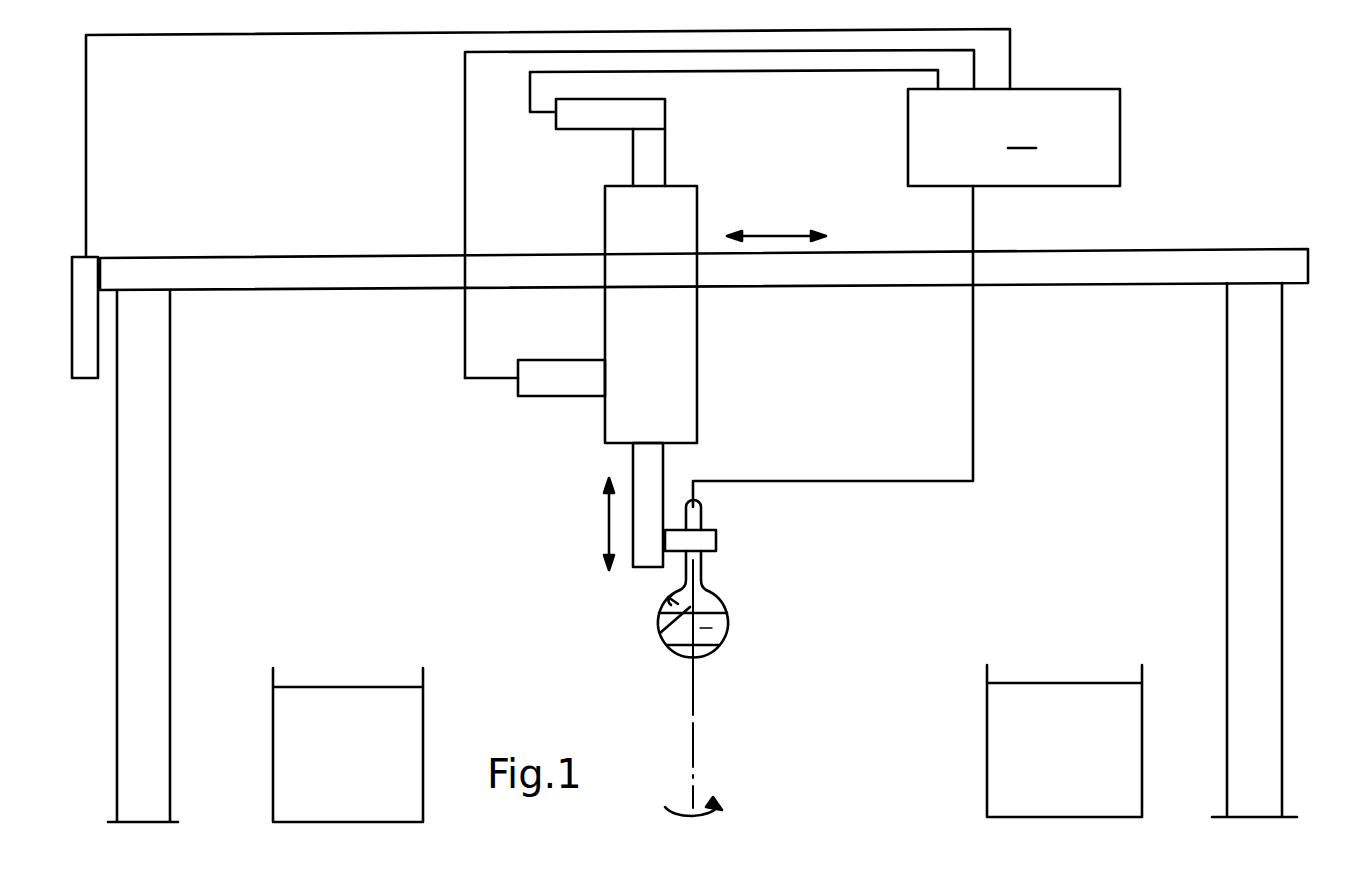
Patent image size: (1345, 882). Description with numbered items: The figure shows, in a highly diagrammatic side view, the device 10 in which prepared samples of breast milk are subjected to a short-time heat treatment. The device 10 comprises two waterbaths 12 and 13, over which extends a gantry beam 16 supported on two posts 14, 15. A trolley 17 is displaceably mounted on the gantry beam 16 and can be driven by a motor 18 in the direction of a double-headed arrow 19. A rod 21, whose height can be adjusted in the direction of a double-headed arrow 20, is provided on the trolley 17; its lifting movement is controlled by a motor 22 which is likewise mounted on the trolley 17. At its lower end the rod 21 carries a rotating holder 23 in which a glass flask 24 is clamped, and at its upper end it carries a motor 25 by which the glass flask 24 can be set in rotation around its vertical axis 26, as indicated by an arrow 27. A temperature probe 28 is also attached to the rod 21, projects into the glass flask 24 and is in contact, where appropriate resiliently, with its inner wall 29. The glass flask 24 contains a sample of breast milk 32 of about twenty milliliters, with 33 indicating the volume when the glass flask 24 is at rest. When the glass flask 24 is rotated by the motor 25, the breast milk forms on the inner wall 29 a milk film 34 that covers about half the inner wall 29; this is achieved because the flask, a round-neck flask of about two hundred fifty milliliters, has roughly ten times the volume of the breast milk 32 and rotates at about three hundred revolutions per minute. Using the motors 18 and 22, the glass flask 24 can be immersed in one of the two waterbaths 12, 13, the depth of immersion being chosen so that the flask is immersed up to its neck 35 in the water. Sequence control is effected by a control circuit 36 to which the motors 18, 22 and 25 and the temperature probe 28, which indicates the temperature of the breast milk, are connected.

The device 10 is at (1182, 155).
The waterbath 12 is at (343, 792).
The waterbath 13 is at (1048, 788).
The post 14 is at (157, 545).
The post 15 is at (1240, 488).
The gantry beam 16 is at (1188, 266).
The trolley 17 is at (673, 240).
The motor 18 is at (83, 367).
The double-headed arrow 19 is at (778, 236).
The double-headed arrow 20 is at (608, 523).
The rod 21 is at (652, 471).
The motor 22 is at (528, 386).
The rotating holder 23 is at (707, 542).
The glass flask 24 is at (723, 592).
The motor 25 is at (655, 118).
The vertical axis 26 is at (693, 713).
The arrow 27 is at (720, 812).
The temperature probe 28 is at (660, 633).
The inner wall 29 is at (658, 610).
The sample of breast milk 32 is at (708, 628).
The volume 33 is at (702, 657).
The milk film 34 is at (728, 612).
The neck 35 is at (705, 566).
The control circuit 36 is at (603, 268).